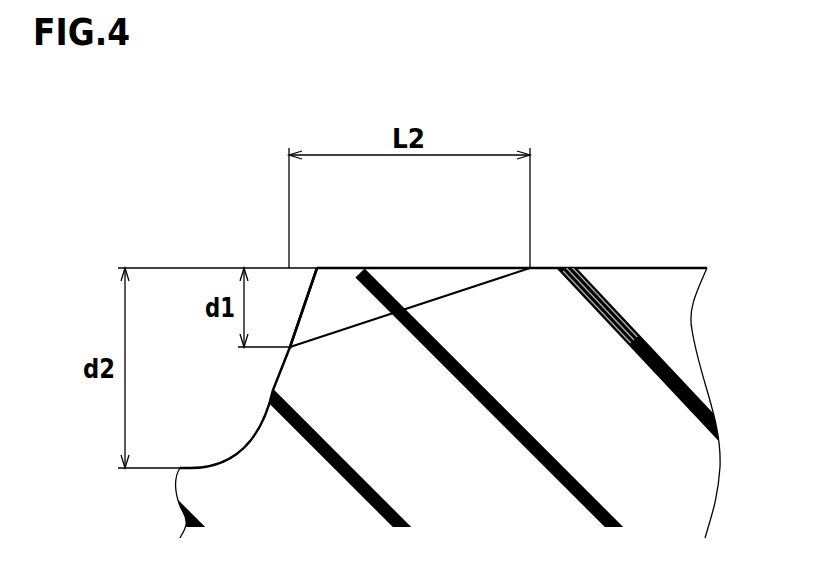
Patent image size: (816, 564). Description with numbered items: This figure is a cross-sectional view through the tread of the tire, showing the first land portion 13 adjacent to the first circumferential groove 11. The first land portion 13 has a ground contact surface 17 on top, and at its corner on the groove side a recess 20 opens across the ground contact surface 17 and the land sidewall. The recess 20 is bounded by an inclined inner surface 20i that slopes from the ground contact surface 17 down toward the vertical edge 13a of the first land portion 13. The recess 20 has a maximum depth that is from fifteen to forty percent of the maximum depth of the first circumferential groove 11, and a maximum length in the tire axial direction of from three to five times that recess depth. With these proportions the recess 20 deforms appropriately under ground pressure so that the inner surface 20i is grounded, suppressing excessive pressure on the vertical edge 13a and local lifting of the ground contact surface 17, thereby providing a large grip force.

The first circumferential groove 11 is at (228, 430).
The first land portion 13 is at (588, 268).
The vertical edge 13a is at (317, 268).
The ground contact surface 17 is at (653, 268).
The recess 20 is at (362, 303).
The inner surface 20i is at (409, 288).